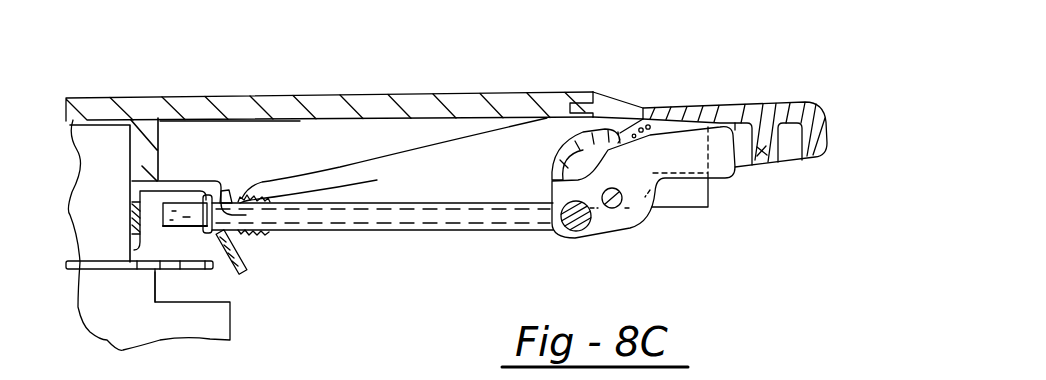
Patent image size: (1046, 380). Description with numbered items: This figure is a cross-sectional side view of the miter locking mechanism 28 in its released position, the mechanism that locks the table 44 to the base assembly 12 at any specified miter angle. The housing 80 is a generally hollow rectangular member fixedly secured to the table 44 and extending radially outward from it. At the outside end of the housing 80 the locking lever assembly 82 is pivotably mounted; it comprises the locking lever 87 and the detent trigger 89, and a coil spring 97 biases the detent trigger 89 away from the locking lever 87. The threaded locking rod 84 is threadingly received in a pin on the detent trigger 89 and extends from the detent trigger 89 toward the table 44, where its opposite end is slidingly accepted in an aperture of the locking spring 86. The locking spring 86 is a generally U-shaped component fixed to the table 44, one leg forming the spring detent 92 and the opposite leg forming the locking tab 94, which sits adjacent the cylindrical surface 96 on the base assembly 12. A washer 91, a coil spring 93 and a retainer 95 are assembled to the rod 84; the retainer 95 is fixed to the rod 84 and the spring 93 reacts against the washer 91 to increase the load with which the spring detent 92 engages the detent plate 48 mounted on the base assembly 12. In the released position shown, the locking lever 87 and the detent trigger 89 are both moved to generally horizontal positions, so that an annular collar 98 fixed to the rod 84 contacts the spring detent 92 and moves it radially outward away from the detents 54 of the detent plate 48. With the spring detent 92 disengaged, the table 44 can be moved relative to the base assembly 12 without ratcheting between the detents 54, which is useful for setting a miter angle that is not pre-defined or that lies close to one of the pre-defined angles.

The base assembly 12 is at (132, 325).
The locking mechanism 28 is at (448, 280).
The table 44 is at (107, 102).
The detent plate 48 is at (193, 272).
The detents 54 is at (178, 272).
The housing 80 is at (508, 103).
The locking lever assembly 82 is at (735, 97).
The threaded locking rod 84 is at (530, 216).
The locking spring 86 is at (178, 188).
The locking lever 87 is at (760, 150).
The detent trigger 89 is at (696, 162).
The washer 91 is at (216, 249).
The spring detent 92 is at (246, 259).
The coil spring 93 is at (288, 182).
The locking tab 94 is at (128, 217).
The retainer 95 is at (324, 186).
The cylindrical surface 96 is at (129, 255).
The coil spring 97 is at (643, 124).
The annular collar 98 is at (242, 198).